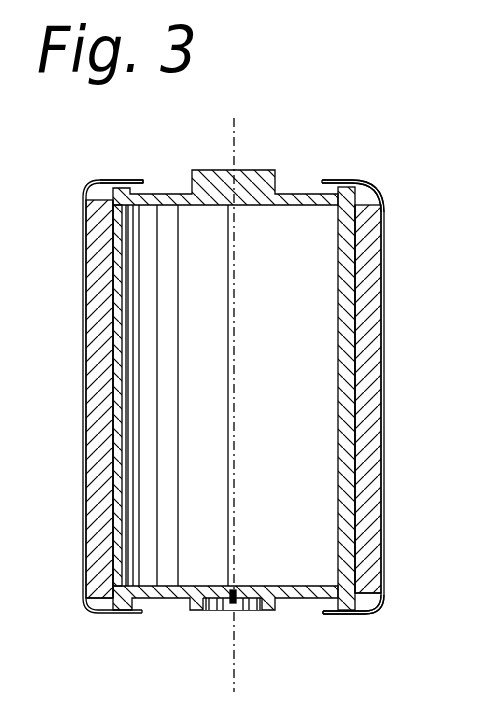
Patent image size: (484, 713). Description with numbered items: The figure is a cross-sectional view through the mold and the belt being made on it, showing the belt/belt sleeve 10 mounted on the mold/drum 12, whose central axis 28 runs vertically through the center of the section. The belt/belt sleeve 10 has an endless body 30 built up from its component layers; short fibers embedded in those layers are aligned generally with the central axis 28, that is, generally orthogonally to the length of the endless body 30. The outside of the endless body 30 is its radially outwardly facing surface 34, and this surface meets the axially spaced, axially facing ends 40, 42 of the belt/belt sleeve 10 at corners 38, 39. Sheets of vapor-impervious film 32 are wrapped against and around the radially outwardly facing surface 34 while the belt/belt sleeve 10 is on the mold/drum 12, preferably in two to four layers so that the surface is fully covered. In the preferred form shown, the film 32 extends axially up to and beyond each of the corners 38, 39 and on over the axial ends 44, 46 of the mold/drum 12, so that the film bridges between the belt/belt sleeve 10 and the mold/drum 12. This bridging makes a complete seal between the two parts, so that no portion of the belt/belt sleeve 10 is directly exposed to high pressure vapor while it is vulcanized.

The belt/belt sleeve 10 is at (372, 196).
The mold/drum 12 is at (252, 170).
The central axis 28 is at (237, 352).
The endless body 30 is at (375, 268).
The vapor-impervious film 32 is at (143, 181).
The radially outwardly facing surface 34 is at (84, 378).
The corner 38 is at (384, 207).
The corner 39 is at (384, 596).
The axially facing end 40 is at (365, 193).
The axially facing end 42 is at (372, 614).
The axial end 44 is at (340, 180).
The axial end 46 is at (341, 613).